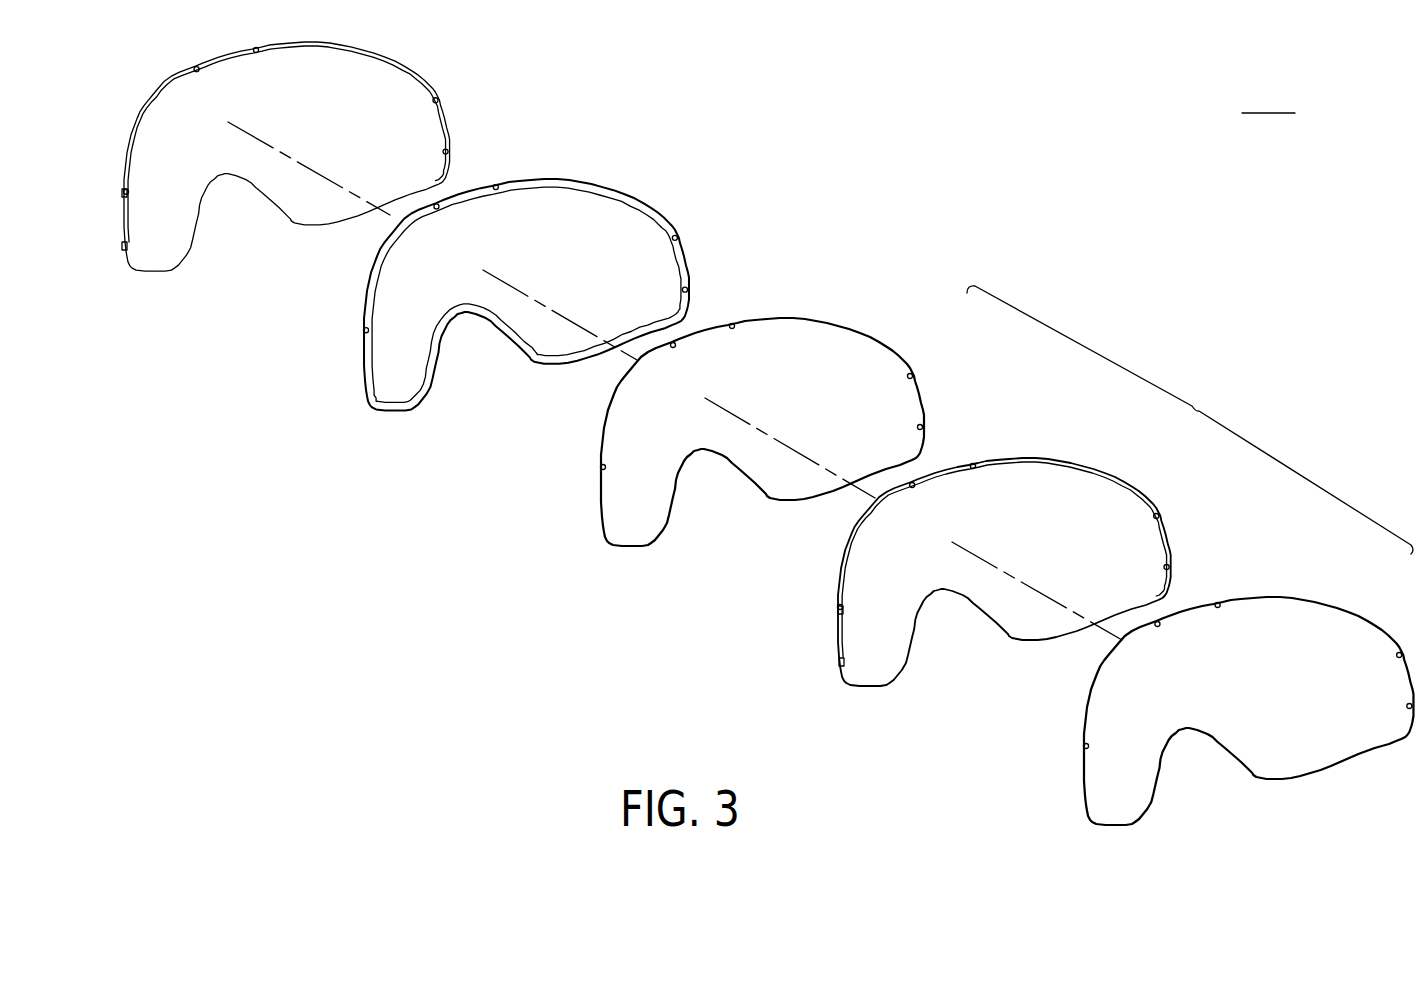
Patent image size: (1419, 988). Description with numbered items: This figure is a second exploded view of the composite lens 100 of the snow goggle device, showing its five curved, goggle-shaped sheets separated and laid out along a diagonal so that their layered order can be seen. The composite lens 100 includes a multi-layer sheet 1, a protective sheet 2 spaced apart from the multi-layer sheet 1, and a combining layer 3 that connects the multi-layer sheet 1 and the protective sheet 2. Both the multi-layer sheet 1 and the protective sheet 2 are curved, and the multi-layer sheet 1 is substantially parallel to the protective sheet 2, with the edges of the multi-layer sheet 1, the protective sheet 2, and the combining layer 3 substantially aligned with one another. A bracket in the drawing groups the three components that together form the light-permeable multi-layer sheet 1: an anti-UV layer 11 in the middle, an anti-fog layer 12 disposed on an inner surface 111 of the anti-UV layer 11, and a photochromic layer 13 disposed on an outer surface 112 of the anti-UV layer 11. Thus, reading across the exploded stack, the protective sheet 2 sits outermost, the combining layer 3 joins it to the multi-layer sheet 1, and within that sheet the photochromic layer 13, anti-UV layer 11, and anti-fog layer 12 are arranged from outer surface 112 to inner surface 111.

The composite lens 100 is at (1268, 97).
The multi-layer sheet 1 is at (1190, 420).
The protective sheet 2 is at (438, 78).
The combining layer 3 is at (656, 206).
The photochromic layer 13 is at (905, 350).
The anti-UV layer 11 is at (1137, 480).
The inner surface 111 is at (889, 627).
The outer surface 112 is at (836, 572).
The anti-fog layer 12 is at (1380, 628).